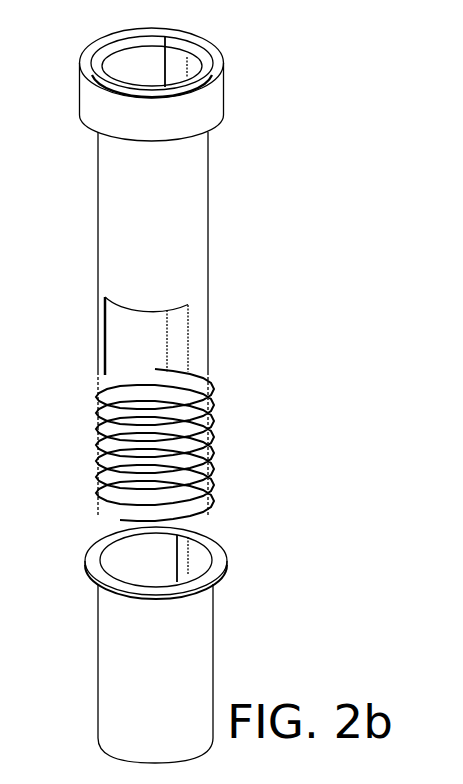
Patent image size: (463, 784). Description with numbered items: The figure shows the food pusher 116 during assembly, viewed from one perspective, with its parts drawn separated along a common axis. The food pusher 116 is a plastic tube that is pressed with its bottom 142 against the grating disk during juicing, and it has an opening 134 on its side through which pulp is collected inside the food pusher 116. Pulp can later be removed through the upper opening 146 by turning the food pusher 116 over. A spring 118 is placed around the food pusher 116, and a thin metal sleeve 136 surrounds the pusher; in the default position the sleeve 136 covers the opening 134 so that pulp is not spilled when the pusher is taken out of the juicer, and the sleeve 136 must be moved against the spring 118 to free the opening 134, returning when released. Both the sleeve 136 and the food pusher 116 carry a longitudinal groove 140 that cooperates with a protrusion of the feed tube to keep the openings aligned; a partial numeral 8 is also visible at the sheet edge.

The food pusher 116 is at (198, 207).
The upper opening 146 is at (168, 72).
The opening 134 is at (126, 339).
The bottom 142 is at (160, 382).
The spring 118 is at (216, 428).
The longitudinal groove 140 is at (195, 557).
The sleeve 136 is at (98, 657).
The partial numeral 8 is at (9, 244).